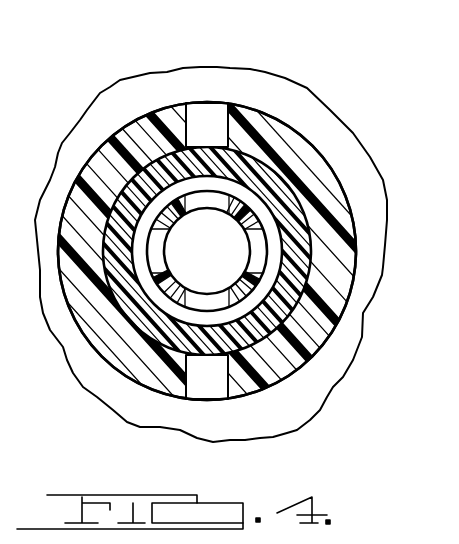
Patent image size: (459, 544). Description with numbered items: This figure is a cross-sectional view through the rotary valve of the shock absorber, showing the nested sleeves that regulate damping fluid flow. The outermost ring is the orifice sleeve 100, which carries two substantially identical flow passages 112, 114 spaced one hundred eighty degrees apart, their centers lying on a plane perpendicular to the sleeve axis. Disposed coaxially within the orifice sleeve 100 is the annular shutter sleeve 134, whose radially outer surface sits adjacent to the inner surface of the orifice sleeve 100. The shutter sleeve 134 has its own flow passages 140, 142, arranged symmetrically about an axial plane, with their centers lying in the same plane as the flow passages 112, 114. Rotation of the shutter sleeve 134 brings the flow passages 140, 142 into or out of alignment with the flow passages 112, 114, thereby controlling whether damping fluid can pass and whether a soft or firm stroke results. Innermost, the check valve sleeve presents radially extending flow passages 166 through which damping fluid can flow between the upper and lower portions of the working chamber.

The orifice sleeve 100 is at (292, 357).
The flow passage 112 is at (202, 388).
The flow passage 114 is at (208, 118).
The shutter sleeve 134 is at (285, 200).
The flow passage 140 is at (140, 192).
The flow passage 142 is at (275, 307).
The flow passages 166 is at (262, 247).